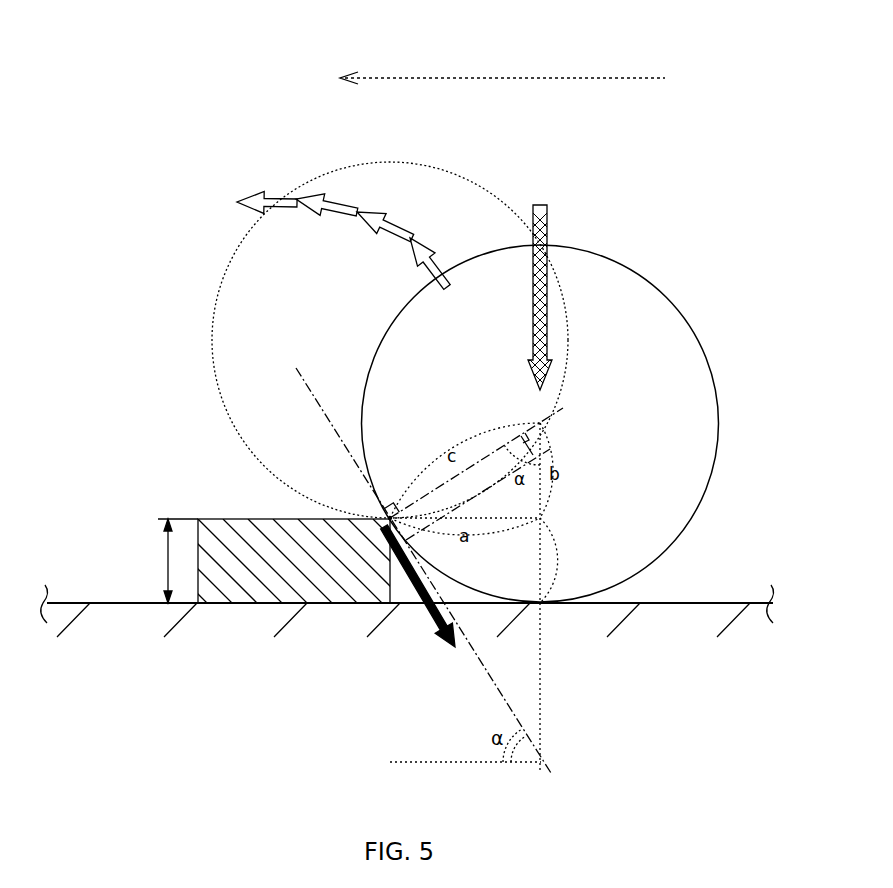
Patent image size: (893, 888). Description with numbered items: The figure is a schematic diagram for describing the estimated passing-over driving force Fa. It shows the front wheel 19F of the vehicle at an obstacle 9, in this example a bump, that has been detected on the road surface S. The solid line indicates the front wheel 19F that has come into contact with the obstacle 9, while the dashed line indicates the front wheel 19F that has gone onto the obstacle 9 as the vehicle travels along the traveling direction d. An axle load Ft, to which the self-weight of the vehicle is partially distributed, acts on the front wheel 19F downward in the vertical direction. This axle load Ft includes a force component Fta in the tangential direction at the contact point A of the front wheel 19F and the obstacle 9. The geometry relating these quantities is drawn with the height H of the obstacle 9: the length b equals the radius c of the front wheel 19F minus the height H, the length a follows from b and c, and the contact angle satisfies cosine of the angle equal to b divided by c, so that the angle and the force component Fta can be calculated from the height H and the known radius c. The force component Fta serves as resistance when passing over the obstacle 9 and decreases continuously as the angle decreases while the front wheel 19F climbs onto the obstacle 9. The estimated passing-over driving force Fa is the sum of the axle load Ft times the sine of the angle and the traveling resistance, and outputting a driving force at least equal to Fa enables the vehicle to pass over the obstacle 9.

The front wheel 19F is at (445, 165).
The obstacle 9 is at (229, 518).
The contact point A is at (385, 517).
The road surface S is at (110, 600).
The height H is at (354, 561).
The traveling direction d is at (497, 78).
The axle load Ft is at (540, 288).
The estimated passing-over driving force Fa is at (325, 241).
The force component Fta is at (419, 603).